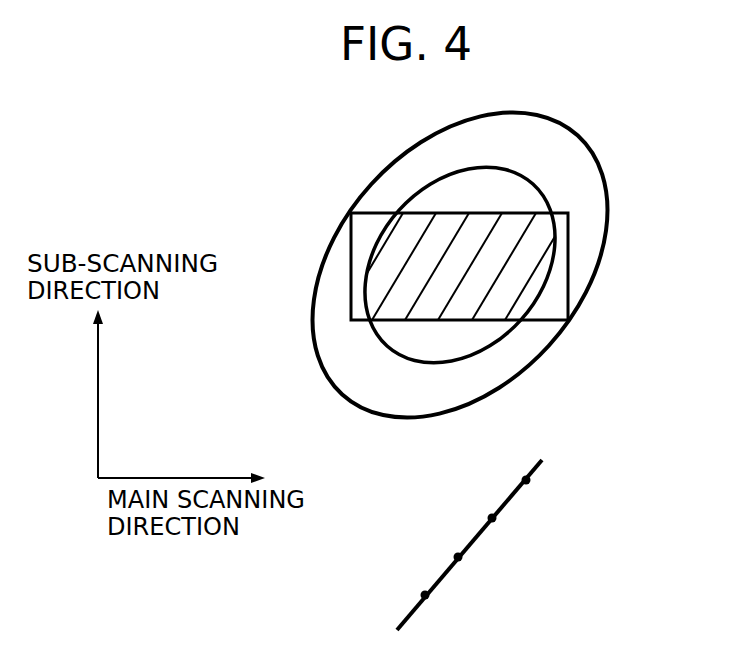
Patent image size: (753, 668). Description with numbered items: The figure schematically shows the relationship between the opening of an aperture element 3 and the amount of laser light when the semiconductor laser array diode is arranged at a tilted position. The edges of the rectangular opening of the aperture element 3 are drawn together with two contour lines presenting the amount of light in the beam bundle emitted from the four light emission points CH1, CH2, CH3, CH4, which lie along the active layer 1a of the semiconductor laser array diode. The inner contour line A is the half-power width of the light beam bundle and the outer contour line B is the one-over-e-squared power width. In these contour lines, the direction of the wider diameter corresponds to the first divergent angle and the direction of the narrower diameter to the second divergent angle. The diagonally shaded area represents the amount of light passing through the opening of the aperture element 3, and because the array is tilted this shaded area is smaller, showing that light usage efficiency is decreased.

The aperture element 3 is at (568, 238).
The half-power width contour line A is at (498, 338).
The 1/e² power width contour line B is at (597, 285).
The active layer 1a is at (410, 612).
The light emission point CH1 is at (526, 480).
The light emission point CH2 is at (492, 518).
The light emission point CH3 is at (458, 557).
The light emission point CH4 is at (425, 595).